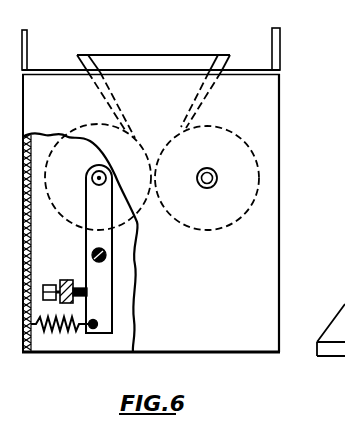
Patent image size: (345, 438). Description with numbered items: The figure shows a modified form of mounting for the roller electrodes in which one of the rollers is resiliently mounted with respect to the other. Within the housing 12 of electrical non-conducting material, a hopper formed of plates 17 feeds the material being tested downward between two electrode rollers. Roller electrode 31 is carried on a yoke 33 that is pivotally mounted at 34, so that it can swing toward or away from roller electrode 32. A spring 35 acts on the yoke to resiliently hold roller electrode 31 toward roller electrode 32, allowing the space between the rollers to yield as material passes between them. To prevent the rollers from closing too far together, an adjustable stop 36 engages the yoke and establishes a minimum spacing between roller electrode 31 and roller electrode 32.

The housing 12 is at (268, 276).
The plates 17 is at (184, 57).
The roller electrode 31 is at (59, 158).
The roller electrode 32 is at (233, 136).
The yoke 33 is at (92, 209).
The pivot 34 is at (92, 256).
The spring 35 is at (58, 333).
The adjustable stop 36 is at (63, 282).